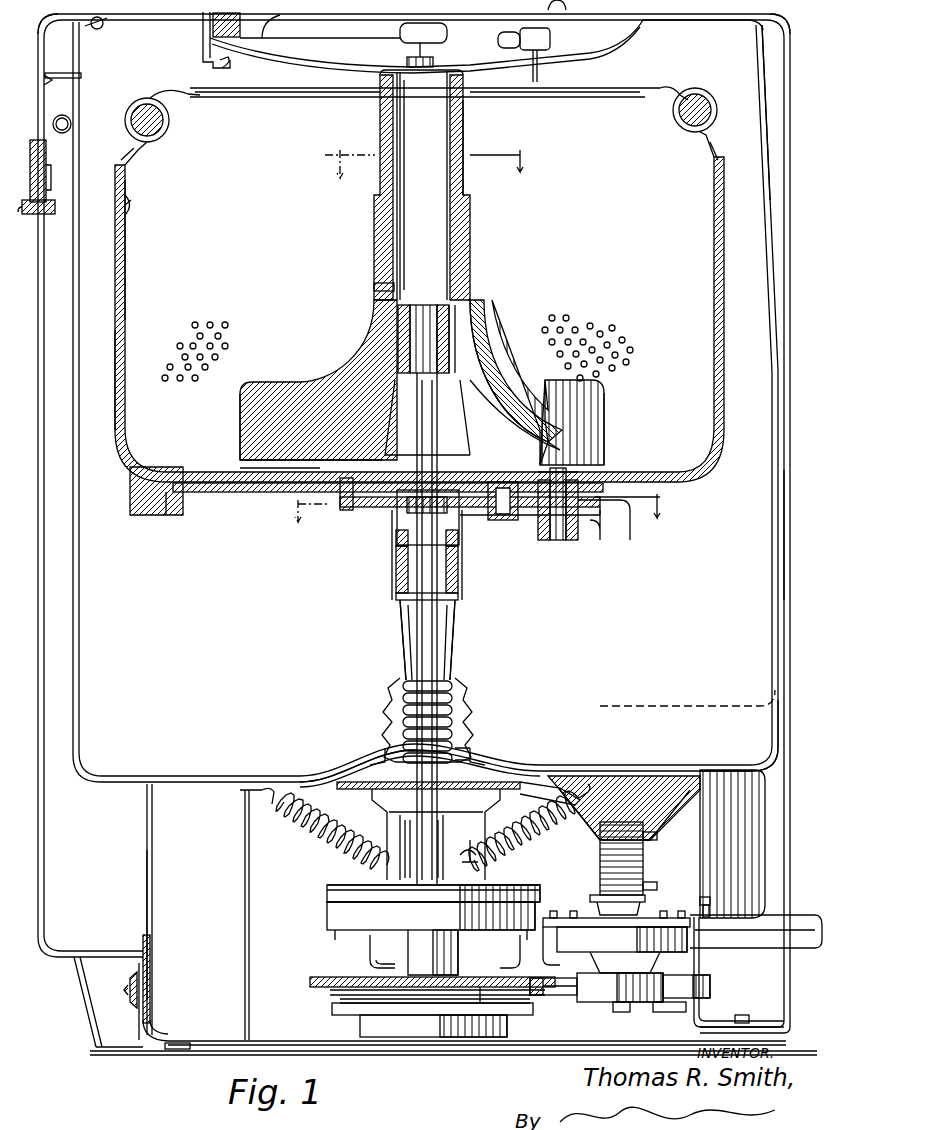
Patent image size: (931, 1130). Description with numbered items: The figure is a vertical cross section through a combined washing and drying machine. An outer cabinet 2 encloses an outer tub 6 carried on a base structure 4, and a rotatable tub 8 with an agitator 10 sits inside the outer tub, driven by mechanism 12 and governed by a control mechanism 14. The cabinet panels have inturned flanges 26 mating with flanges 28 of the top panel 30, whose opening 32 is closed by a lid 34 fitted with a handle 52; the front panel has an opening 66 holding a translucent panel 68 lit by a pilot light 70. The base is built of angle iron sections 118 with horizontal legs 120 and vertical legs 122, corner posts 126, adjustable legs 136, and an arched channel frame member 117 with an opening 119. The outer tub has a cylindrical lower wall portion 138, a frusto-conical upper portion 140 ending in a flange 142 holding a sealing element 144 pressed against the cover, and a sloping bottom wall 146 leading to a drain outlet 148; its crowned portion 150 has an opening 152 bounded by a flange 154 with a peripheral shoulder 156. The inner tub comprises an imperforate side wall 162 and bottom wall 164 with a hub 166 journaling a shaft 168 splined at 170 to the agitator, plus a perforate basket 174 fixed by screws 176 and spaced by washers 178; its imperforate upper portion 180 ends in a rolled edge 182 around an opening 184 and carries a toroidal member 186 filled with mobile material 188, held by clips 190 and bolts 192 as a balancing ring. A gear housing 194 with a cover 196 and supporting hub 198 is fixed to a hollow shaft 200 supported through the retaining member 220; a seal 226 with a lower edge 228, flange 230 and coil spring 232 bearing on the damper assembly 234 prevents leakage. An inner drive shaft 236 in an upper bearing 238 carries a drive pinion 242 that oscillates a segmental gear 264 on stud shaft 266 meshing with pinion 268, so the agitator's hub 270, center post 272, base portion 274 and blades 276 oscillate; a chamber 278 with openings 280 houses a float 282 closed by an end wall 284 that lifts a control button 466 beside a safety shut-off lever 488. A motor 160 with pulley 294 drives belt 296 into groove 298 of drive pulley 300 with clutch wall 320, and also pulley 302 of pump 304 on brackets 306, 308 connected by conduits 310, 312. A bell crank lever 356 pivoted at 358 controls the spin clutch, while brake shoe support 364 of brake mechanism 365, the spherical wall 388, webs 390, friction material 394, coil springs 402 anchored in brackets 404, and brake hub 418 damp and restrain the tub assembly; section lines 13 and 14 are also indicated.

The outer cabinet 2 is at (786, 318).
The base structure 4 is at (340, 1049).
The outer tub 6 is at (785, 473).
The rotatable tub 8 is at (728, 317).
The agitator 10 is at (420, 28).
The mechanism 12 is at (326, 928).
The section line 13 is at (472, 505).
The control mechanism 14 is at (431, 158).
The inturned flanges 26 is at (48, 80).
The flanges 28 is at (82, 75).
The top panel 30 is at (790, 50).
The opening 32 is at (222, 68).
The lid 34 is at (562, 12).
The handle 52 is at (255, 45).
The opening 66 is at (48, 216).
The panel 68 is at (50, 158).
The pilot light 70 is at (72, 120).
The channel shaped frame member 117 is at (370, 946).
The L-shaped angle iron sections 118 is at (160, 1010).
The opening 119 is at (378, 966).
The horizontal leg 120 is at (170, 1050).
The vertical leg 122 is at (143, 948).
The corner posts 126 is at (165, 872).
The adjustable leg 136 is at (182, 1056).
The lower side wall portion 138 is at (80, 618).
The upper side wall portion 140 is at (766, 137).
The inwardly extending flange 142 is at (104, 28).
The sealing element 144 is at (78, 30).
The bottom wall 146 is at (178, 785).
The drain outlet 148 is at (706, 768).
The crowned portion 150 is at (355, 775).
The opening 152 is at (478, 740).
The annular upstanding flange 154 is at (370, 745).
The outwardly extending peripheral portion 156 is at (384, 720).
The motor 160 is at (770, 814).
The imperforate side wall 162 is at (114, 372).
The imperforate bottom wall 164 is at (252, 492).
The central hub 166 is at (262, 441).
The shaft 168 is at (455, 440).
The spline 170 is at (450, 310).
The perforate basket 174 is at (132, 272).
The screws 176 is at (134, 212).
The spacing washers 178 is at (122, 215).
The upper portion 180 is at (170, 132).
The rolled edge 182 is at (650, 82).
The opening 184 is at (572, 92).
The tubular member 186 is at (705, 90).
The mobile material 188 is at (712, 113).
The clips 190 is at (158, 98).
The bolts 192 is at (190, 98).
The gear housing 194 is at (608, 447).
The cover 196 is at (514, 522).
The supporting hub 198 is at (455, 575).
The hollow shaft 200 is at (456, 600).
The retaining member 220 is at (398, 950).
The seal 226 is at (468, 700).
The enlarged lower marginal edge 228 is at (478, 748).
The inwardly extending flange portion 230 is at (402, 660).
The coil spring 232 is at (390, 696).
The damper assembly 234 is at (392, 862).
The inner drive shaft 236 is at (396, 596).
The upper bearing 238 is at (395, 572).
The drive pinion 242 is at (396, 542).
The segmental gear 264 is at (528, 530).
The stud shaft 266 is at (556, 542).
The pinion 268 is at (470, 458).
The central hub 270 is at (450, 330).
The center post 272 is at (466, 270).
The base portion 274 is at (485, 400).
The blades 276 is at (252, 378).
The inner chamber 278 is at (460, 142).
The openings 280 is at (376, 288).
The float 282 is at (448, 112).
The end wall 284 is at (380, 96).
The pulley 294 is at (712, 986).
The belt 296 is at (328, 992).
The V-shaped groove 298 is at (312, 980).
The drive pulley 300 is at (345, 1004).
The pulley 302 is at (585, 1004).
The centrifugal liquid discharge pump 304 is at (660, 935).
The bracket 306 is at (580, 952).
The bracket 308 is at (702, 1003).
The conduit 310 is at (628, 862).
The conduit 312 is at (806, 950).
The cylindrical wall 320 is at (398, 1038).
The bell crank lever 356 is at (540, 830).
The pivot 358 is at (500, 866).
The brake shoe support 364 is at (330, 888).
The brake mechanism 365 is at (330, 905).
The spherical shaped wall 388 is at (360, 792).
The webs 390 is at (380, 816).
The friction material 394 is at (340, 780).
The coil springs 402 is at (330, 845).
The bracket 404 is at (245, 795).
The hub 418 is at (445, 942).
The control button 466 is at (405, 63).
The safety shut-off lever 488 is at (512, 74).